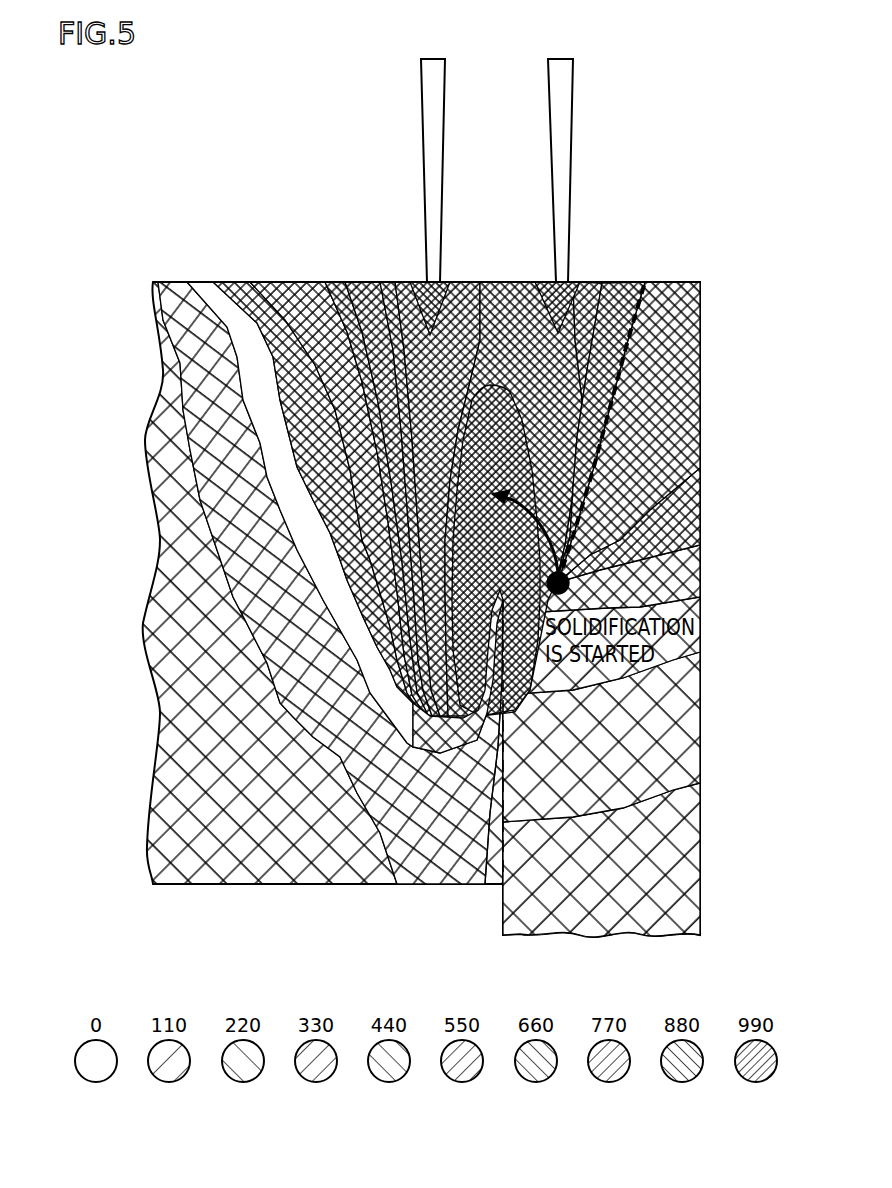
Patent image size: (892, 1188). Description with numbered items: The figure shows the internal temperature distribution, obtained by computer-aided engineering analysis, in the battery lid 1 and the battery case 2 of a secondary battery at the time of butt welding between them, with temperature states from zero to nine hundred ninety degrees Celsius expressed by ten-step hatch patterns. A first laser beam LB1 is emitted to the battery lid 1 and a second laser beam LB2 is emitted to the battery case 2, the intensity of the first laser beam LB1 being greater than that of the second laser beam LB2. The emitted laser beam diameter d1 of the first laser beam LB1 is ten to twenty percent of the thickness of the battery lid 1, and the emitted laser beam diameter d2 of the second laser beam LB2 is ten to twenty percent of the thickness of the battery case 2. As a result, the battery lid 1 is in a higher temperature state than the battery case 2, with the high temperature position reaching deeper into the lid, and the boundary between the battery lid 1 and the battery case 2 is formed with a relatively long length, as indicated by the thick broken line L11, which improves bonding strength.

The battery lid 1 is at (285, 848).
The battery case 2 is at (648, 847).
The first laser beam LB1 is at (433, 157).
The second laser beam LB2 is at (561, 157).
The emitted laser beam diameter of first laser beam d1 is at (427, 280).
The emitted laser beam diameter of second laser beam d2 is at (567, 280).
The thick broken line L11 is at (630, 395).